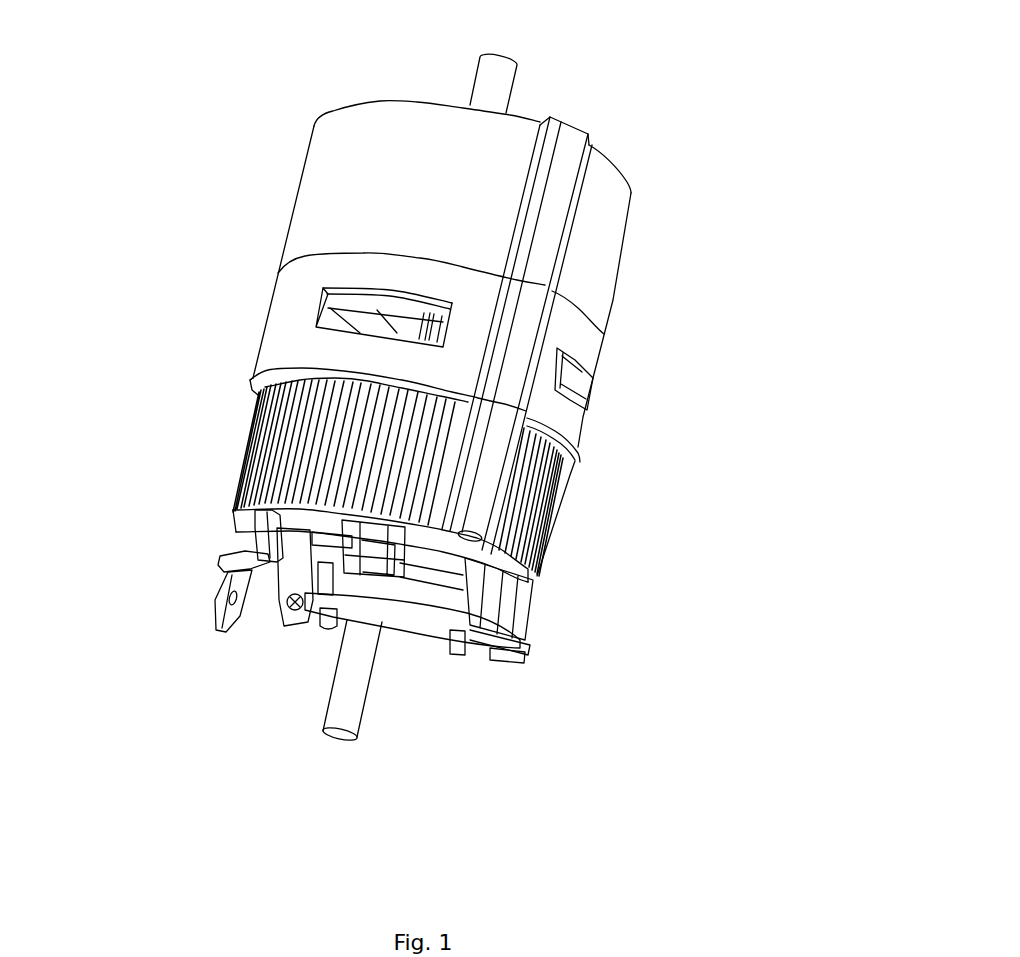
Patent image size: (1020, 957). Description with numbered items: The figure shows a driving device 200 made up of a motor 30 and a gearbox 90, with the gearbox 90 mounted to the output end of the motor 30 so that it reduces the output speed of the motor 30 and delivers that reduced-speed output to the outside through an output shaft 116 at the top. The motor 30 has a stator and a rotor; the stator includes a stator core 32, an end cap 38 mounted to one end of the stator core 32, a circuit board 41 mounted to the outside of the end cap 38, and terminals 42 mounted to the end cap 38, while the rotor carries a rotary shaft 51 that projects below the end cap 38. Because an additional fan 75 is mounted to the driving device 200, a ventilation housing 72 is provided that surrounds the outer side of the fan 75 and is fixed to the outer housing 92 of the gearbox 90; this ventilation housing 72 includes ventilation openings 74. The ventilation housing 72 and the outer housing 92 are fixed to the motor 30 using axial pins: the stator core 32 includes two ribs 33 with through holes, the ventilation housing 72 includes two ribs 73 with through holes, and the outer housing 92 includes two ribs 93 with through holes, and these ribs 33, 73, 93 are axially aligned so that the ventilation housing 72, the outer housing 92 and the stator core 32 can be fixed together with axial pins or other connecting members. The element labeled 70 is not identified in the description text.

The driving device 200 is at (383, 37).
The output shaft 116 is at (502, 87).
The gearbox 90 is at (622, 248).
The outer housing 92 is at (335, 150).
The ribs 93 is at (557, 193).
The housing 70 is at (580, 437).
The ventilation housing 72 is at (287, 285).
The ribs 73 is at (527, 330).
The ventilation openings 74 is at (322, 305).
The fan 75 is at (350, 313).
The motor 30 is at (540, 547).
The stator core 32 is at (277, 430).
The ribs 33 is at (495, 480).
The end cap 38 is at (248, 526).
The terminals 42 is at (233, 585).
The circuit board 41 is at (427, 625).
The rotary shaft 51 is at (373, 677).